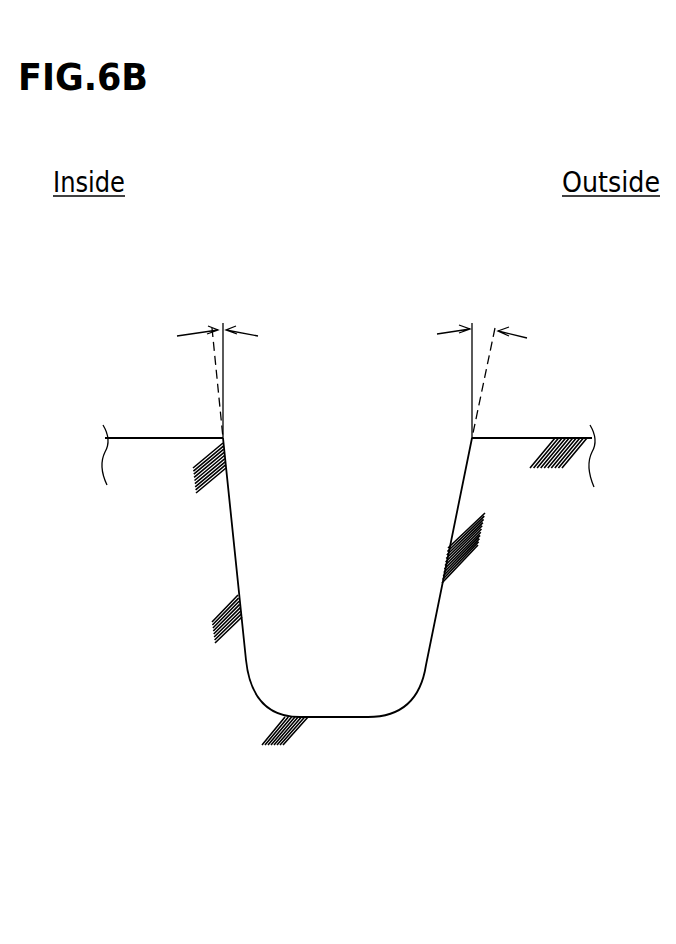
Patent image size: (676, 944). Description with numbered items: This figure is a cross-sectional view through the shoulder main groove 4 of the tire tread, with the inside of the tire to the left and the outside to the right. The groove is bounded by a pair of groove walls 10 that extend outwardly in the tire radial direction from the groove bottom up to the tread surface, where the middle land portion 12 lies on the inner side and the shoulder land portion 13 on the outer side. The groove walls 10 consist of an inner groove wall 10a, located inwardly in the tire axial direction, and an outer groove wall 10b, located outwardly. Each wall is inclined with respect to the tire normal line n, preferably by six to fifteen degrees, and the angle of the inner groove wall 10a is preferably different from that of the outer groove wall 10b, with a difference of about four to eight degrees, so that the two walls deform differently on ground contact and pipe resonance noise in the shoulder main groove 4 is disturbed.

The shoulder main groove 4 is at (340, 648).
The groove walls 10 is at (403, 405).
The inner groove wall 10a is at (238, 577).
The outer groove wall 10b is at (437, 607).
The middle land portion 12 is at (147, 438).
The shoulder land portion 13 is at (537, 438).
The tire normal line n is at (470, 375).